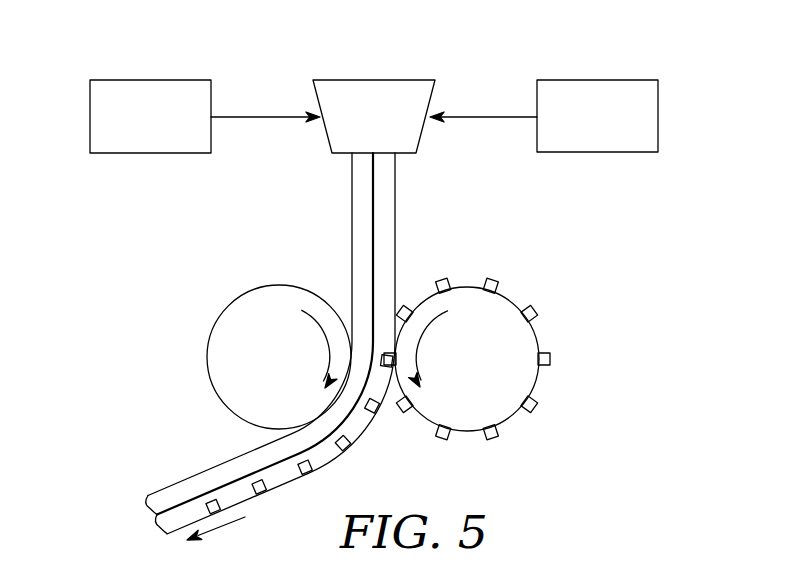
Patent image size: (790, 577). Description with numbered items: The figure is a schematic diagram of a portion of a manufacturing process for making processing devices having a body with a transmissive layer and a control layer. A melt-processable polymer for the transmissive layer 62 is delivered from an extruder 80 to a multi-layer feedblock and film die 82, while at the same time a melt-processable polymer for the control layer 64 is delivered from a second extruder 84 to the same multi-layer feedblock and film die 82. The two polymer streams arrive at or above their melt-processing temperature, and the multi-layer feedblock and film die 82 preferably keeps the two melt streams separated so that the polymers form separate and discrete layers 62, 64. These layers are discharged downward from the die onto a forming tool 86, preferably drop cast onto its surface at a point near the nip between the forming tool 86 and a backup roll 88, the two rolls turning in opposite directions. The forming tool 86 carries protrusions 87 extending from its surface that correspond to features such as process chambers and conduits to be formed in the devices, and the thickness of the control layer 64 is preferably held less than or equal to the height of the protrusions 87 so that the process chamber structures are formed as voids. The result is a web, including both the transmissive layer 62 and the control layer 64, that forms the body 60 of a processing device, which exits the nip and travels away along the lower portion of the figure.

The body 60 is at (139, 495).
The transmissive layer 62 is at (360, 219).
The control layer 64 is at (384, 221).
The extruder 80 is at (107, 116).
The multi-layer feedblock and film die 82 is at (375, 95).
The extruder 84 is at (637, 110).
The forming tool 86 is at (513, 373).
The protrusions 87 is at (496, 279).
The backup roll 88 is at (233, 331).